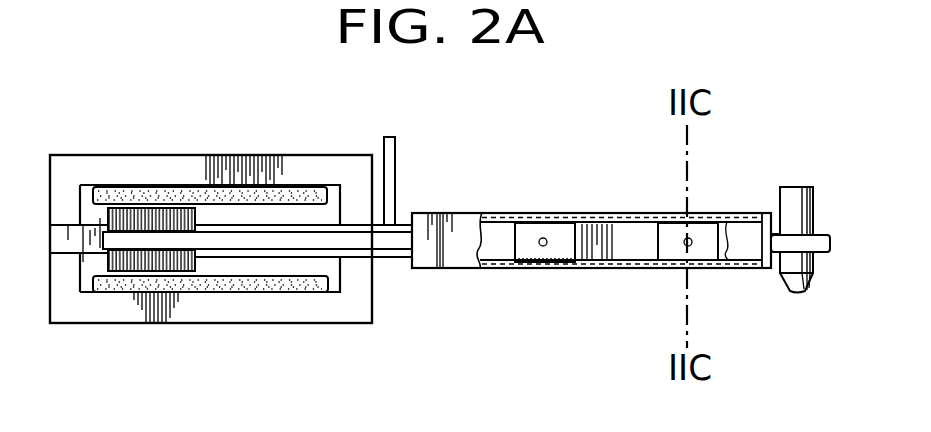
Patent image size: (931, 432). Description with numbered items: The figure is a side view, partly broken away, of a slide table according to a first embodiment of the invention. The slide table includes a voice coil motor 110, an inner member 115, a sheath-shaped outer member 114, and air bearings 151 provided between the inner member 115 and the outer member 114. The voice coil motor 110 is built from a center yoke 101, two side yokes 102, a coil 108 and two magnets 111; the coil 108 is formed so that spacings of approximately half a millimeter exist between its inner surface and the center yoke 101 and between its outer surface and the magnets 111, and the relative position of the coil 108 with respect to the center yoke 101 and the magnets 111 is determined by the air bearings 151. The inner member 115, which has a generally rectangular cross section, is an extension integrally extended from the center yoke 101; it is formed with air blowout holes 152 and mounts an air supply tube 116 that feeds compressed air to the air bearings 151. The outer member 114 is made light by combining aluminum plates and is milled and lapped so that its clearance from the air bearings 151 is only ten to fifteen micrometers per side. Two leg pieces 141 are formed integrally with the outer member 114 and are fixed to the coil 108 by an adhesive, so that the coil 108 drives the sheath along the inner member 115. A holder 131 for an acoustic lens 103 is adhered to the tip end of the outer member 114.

The center yoke 101 is at (70, 228).
The side yoke 102 is at (118, 170).
The acoustic lens 103 is at (795, 198).
The coil 108 is at (162, 215).
The voice coil motor 110 is at (241, 216).
The magnet 111 is at (300, 195).
The outer member 114 is at (731, 188).
The inner member 115 is at (500, 233).
The air supply tube 116 is at (393, 155).
The holder 131 is at (797, 243).
The leg piece 141 is at (378, 240).
The air bearing 151 is at (672, 238).
The air blowout hole 152 is at (540, 235).